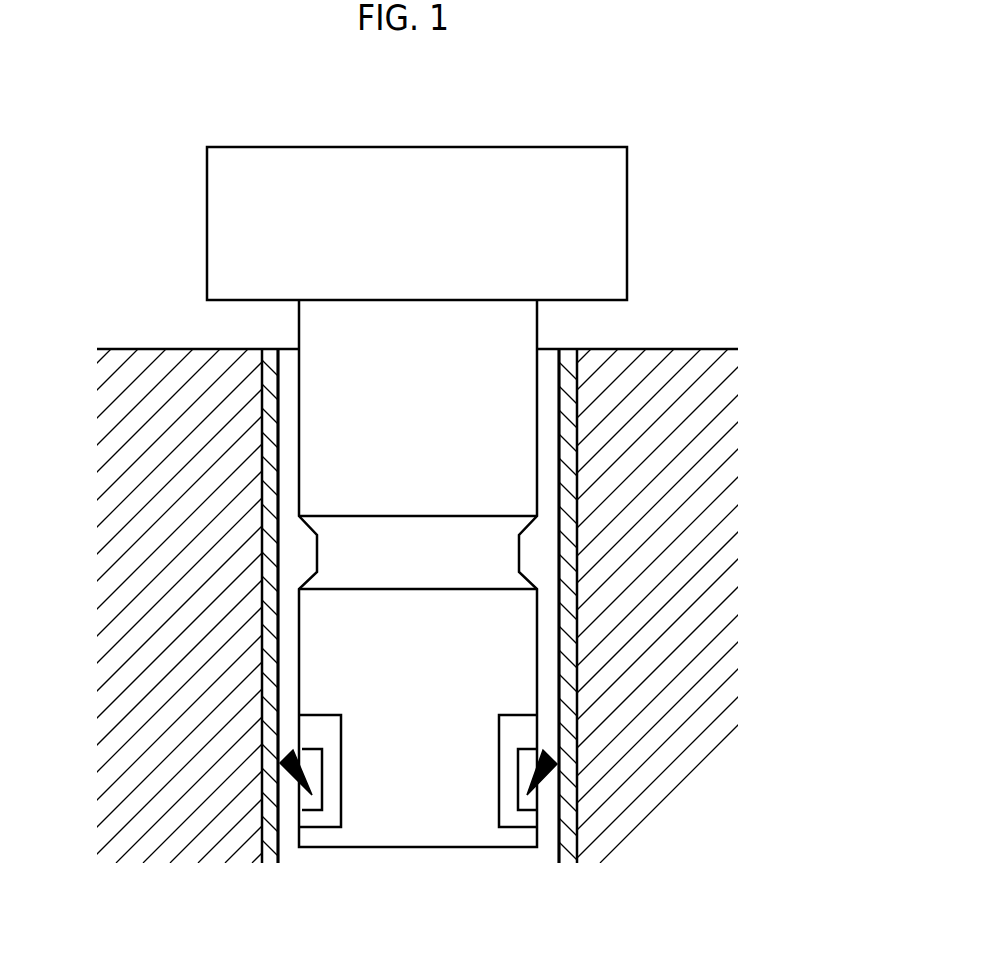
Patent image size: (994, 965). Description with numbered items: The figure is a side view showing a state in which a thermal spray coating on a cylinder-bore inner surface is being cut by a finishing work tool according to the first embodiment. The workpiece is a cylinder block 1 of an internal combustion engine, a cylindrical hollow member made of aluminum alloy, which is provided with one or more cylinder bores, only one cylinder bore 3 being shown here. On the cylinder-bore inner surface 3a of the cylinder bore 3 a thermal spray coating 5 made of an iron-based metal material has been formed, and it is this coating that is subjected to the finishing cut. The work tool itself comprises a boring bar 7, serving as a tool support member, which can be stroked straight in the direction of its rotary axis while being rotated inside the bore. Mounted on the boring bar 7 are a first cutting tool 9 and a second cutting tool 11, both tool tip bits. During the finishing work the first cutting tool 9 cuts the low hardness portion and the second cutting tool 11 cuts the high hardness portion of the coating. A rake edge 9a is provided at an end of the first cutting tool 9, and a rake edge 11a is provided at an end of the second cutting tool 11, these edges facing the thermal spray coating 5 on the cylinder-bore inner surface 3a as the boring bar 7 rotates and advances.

The cylinder block 1 is at (174, 348).
The cylinder bore 3 is at (545, 364).
The cylinder-bore inner surface 3a is at (548, 424).
The thermal spray coating 5 is at (270, 360).
The boring bar 7 is at (395, 833).
The first cutting tool 9 is at (294, 772).
The rake edge 9a is at (282, 764).
The second cutting tool 11 is at (547, 772).
The rake edge 11a is at (558, 764).